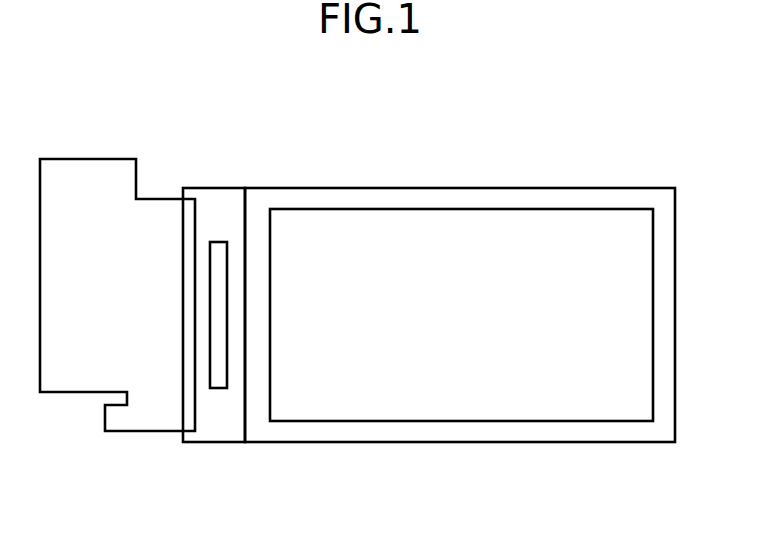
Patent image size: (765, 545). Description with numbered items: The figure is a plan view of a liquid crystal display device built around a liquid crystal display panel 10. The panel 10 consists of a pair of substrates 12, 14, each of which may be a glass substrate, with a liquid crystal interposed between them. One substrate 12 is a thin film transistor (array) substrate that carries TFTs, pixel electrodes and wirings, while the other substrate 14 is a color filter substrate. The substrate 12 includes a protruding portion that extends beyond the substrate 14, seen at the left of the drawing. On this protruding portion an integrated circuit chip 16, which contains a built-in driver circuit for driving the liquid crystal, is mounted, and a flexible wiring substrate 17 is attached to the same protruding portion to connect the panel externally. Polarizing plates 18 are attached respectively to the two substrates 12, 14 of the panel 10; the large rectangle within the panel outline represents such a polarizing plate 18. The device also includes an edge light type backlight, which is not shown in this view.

The liquid crystal display panel 10 is at (521, 156).
The substrate 12 is at (208, 430).
The substrate 14 is at (302, 430).
The integrated circuit chip 16 is at (218, 388).
The flexible wiring substrate 17 is at (133, 420).
The polarizing plate 18 is at (460, 408).